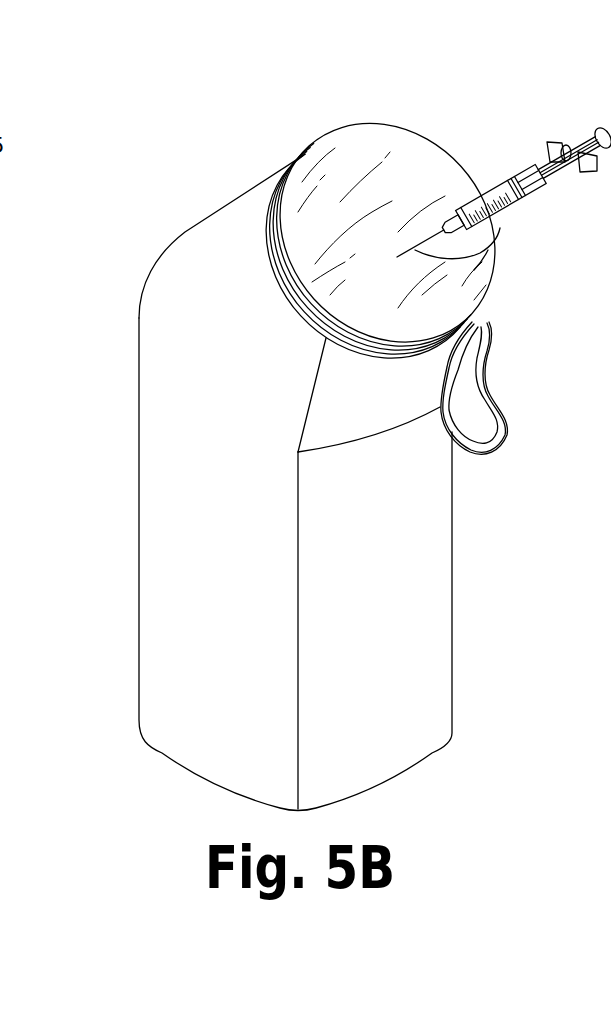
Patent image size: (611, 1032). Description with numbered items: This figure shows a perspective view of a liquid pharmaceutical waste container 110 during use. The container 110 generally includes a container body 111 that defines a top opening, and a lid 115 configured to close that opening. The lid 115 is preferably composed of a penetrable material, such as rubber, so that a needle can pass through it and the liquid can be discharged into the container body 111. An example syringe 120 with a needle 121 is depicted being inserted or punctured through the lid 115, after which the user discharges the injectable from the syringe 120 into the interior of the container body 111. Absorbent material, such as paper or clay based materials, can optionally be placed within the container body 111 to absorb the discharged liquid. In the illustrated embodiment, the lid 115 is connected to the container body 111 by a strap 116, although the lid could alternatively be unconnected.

The container 110 is at (170, 118).
The container body 111 is at (128, 240).
The lid 115 is at (430, 141).
The strap 116 is at (498, 408).
The syringe 120 is at (529, 133).
The needle 121 is at (490, 251).